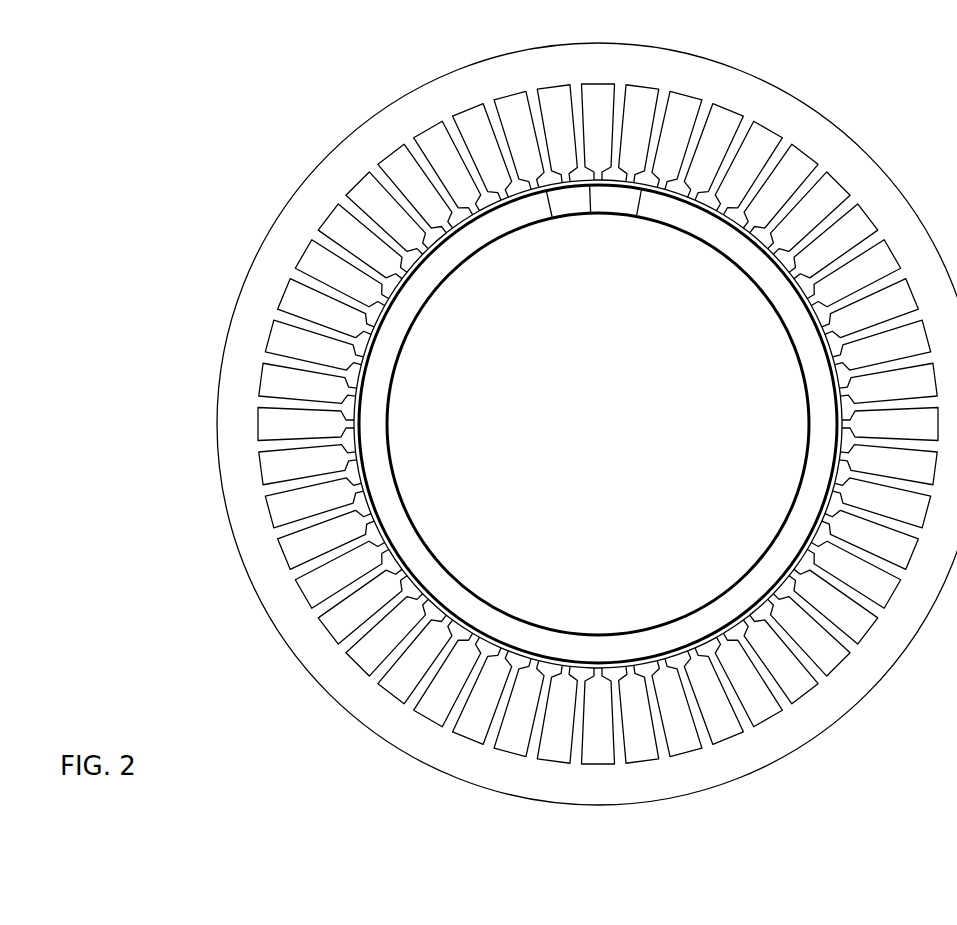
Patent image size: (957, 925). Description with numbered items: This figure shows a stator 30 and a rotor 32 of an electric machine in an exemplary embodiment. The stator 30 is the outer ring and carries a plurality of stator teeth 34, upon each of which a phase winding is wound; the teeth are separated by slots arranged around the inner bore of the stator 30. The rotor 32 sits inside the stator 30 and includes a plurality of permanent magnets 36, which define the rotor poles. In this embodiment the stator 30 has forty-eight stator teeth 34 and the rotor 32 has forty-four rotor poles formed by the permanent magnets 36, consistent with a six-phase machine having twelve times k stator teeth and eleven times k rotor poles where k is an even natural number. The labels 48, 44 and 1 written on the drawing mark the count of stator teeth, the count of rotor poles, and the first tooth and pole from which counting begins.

The stator 30 is at (275, 223).
The rotor 32 is at (423, 310).
The stator teeth 34 is at (465, 197).
The permanent magnets 36 is at (568, 215).
The pole segment label 44 is at (610, 205).
The slot number label 48 is at (611, 172).
The first slot/pole index 1 is at (577, 187).